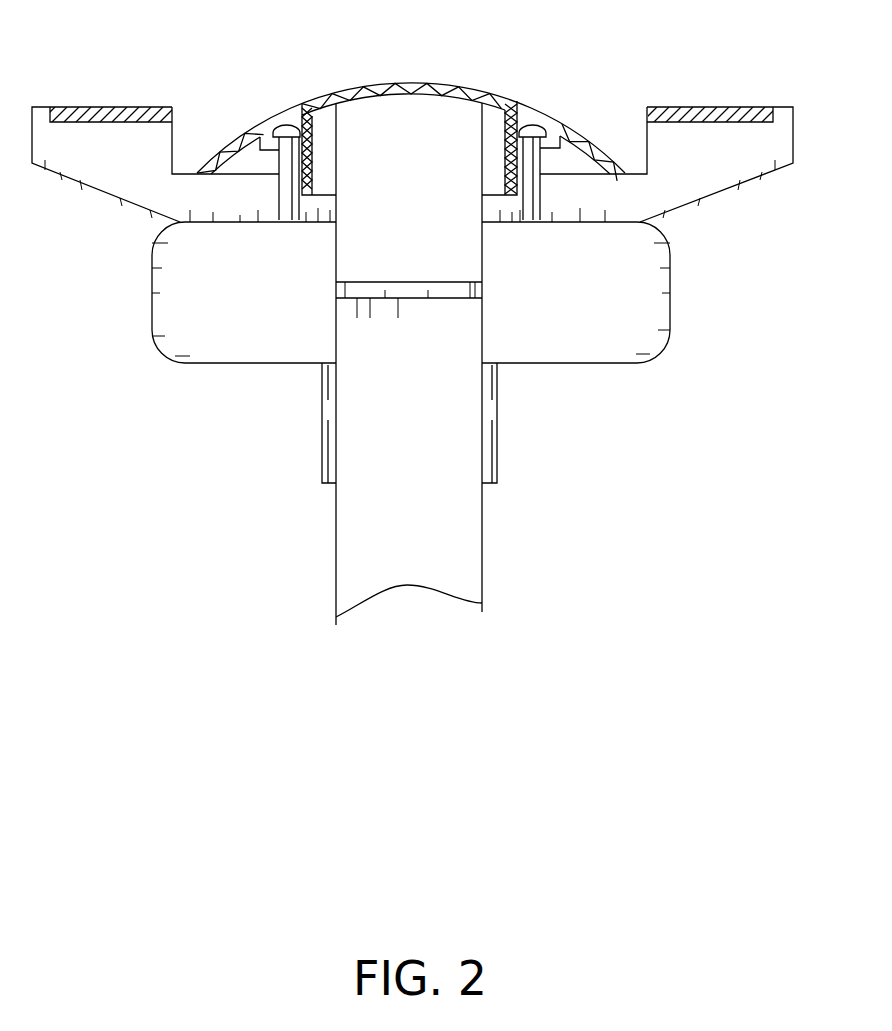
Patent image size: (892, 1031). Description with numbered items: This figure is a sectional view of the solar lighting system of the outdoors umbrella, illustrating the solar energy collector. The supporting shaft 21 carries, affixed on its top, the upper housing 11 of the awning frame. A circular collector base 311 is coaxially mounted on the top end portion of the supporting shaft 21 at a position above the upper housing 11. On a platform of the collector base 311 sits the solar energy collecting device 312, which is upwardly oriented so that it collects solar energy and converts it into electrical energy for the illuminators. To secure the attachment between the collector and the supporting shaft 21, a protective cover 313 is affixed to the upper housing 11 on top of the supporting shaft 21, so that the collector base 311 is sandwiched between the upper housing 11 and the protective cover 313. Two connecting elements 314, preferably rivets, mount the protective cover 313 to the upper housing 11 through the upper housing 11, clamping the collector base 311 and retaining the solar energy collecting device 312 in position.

The collector base 311 is at (747, 163).
The solar energy collecting device 312 is at (128, 110).
The protective cover 313 is at (490, 95).
The connecting elements 314 is at (287, 128).
The upper housing 11 is at (600, 352).
The supporting shaft 21 is at (467, 522).